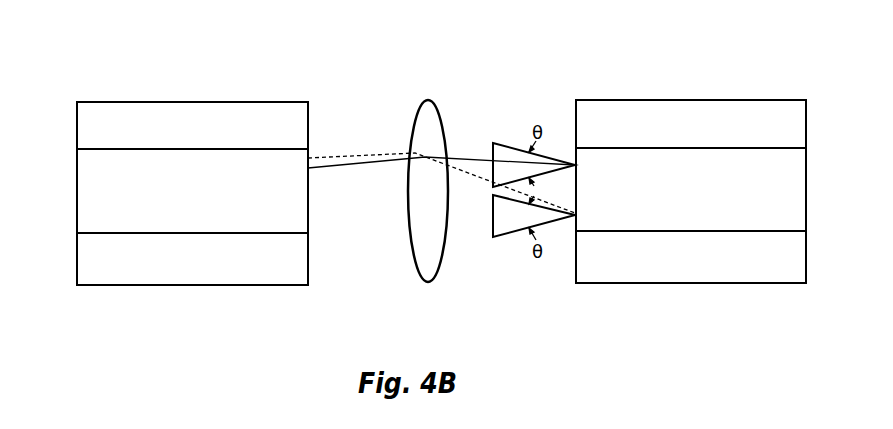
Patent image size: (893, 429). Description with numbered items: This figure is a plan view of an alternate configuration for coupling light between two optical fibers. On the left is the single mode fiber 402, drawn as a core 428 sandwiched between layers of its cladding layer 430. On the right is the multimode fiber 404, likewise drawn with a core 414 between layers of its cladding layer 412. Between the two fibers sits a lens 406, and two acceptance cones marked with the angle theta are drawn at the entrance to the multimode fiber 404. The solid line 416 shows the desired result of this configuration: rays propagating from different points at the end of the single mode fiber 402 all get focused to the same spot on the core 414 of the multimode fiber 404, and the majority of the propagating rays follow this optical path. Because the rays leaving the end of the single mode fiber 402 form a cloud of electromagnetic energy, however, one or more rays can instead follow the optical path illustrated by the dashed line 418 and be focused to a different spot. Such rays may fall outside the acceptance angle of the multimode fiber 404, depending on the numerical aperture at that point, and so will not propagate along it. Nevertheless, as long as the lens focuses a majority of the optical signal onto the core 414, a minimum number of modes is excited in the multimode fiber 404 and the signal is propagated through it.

The single mode fiber 402 is at (187, 92).
The multimode fiber 404 is at (743, 80).
The lens 406 is at (428, 100).
The cladding layer 412 is at (800, 127).
The core 414 is at (800, 191).
The solid line 416 is at (365, 165).
The dashed line 418 is at (377, 153).
The core 428 is at (86, 194).
The cladding layer 430 is at (86, 130).